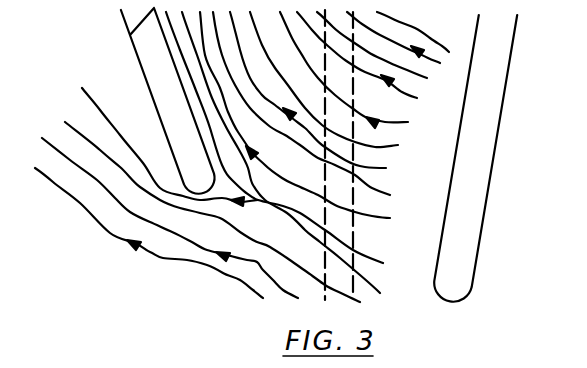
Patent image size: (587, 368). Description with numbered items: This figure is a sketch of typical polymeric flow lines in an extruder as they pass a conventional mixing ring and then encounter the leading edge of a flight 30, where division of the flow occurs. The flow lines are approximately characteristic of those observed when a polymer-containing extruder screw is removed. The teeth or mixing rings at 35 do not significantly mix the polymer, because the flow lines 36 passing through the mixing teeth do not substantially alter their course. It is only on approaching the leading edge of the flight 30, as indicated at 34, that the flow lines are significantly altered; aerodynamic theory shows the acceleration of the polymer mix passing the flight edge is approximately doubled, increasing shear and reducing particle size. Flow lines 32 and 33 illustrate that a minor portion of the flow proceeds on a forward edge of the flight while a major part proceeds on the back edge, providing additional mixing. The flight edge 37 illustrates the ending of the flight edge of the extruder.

The flight 30 is at (168, 101).
The flow line 32 is at (295, 115).
The flow line 33 is at (166, 218).
The point of flow alteration 34 is at (182, 151).
The mixing rings 35 is at (340, 88).
The flow lines 36 is at (288, 147).
The flight edge 37 is at (475, 158).